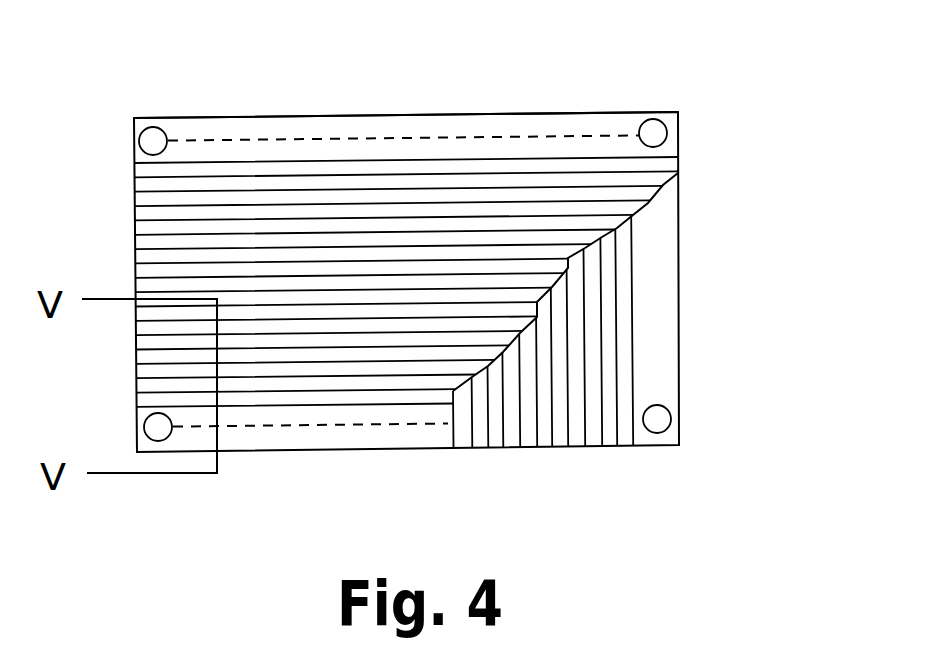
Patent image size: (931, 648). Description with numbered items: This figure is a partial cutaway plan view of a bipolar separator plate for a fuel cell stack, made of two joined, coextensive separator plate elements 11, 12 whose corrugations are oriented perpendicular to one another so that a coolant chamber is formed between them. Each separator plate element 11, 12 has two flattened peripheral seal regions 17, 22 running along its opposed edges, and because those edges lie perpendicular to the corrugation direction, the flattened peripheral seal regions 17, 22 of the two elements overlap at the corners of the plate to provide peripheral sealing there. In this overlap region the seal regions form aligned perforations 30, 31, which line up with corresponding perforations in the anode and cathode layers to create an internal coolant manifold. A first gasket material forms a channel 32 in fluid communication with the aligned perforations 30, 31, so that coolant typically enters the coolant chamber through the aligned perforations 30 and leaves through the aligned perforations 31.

The separator plate element 11 is at (679, 298).
The separator plate element 12 is at (635, 109).
The flattened peripheral seal region 17 is at (337, 122).
The flattened peripheral seal region 22 is at (668, 252).
The aligned perforations 30 is at (664, 121).
The aligned perforations 31 is at (672, 417).
The channel 32 is at (522, 140).